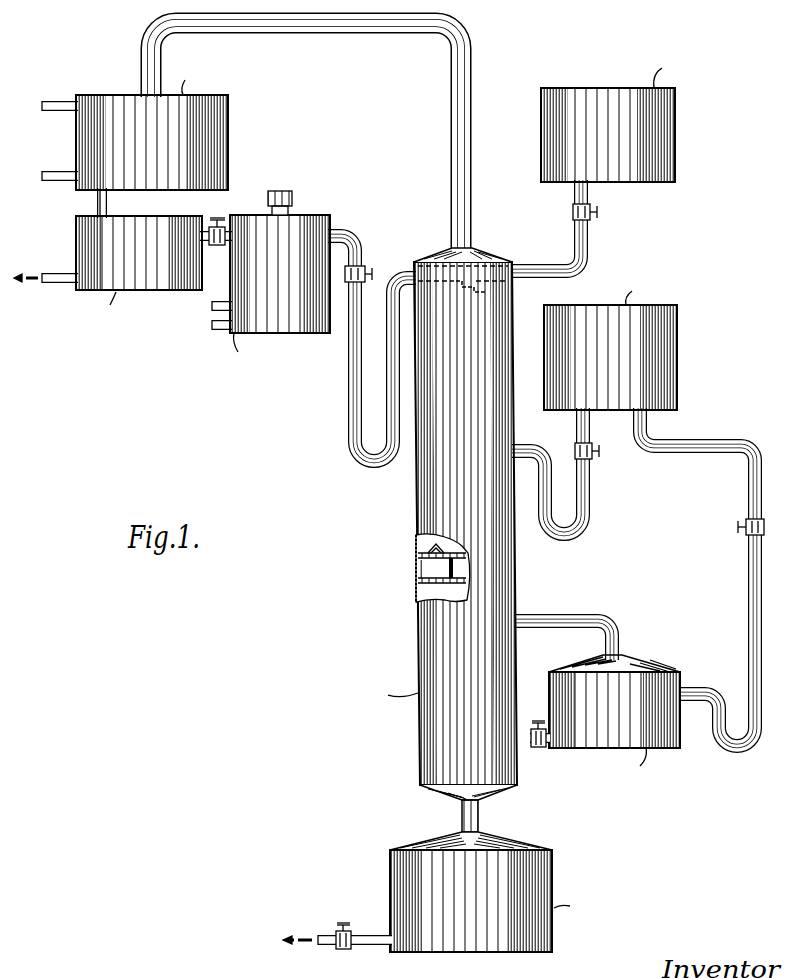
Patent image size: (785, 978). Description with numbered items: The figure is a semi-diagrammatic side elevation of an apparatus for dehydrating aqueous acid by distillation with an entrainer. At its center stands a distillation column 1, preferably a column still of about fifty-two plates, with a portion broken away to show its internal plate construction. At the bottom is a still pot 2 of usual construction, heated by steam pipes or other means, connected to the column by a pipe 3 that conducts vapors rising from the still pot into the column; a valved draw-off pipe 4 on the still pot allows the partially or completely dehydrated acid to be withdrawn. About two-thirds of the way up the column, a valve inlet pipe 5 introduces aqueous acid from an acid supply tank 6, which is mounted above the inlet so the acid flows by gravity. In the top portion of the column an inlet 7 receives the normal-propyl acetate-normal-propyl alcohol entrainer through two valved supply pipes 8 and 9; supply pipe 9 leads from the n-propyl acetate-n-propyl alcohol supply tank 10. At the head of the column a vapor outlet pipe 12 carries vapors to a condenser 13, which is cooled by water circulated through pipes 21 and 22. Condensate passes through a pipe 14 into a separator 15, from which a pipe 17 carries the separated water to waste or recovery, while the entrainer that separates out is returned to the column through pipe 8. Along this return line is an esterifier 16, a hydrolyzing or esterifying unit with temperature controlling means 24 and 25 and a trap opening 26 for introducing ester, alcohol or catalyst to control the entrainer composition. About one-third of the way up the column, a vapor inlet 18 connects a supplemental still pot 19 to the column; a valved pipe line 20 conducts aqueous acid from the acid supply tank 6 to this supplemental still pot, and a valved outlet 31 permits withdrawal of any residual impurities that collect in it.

The distillation column 1 is at (425, 637).
The still pot 2 is at (545, 880).
The pipe 3 is at (474, 818).
The draw-off pipe 4 is at (363, 945).
The valve inlet pipe 5 is at (552, 466).
The acid supply tank 6 is at (666, 346).
The inlet 7 is at (475, 285).
The valved supply pipe 8 is at (218, 224).
The valved supply pipe 9 is at (552, 275).
The n-propyl acetate-n-propyl alcohol supply tank 10 is at (668, 130).
The vapor outlet pipe 12 is at (450, 99).
The condenser 13 is at (212, 118).
The pipe 14 is at (99, 206).
The separator 15 is at (100, 268).
The esterifier 16 is at (314, 216).
The pipe 17 is at (52, 283).
The vapor inlet 18 is at (558, 619).
The supplemental still pot 19 is at (632, 661).
The valved pipe line 20 is at (748, 488).
The pipe 21 is at (62, 167).
The pipe 22 is at (58, 105).
The temperature controlling means 24 is at (218, 330).
The temperature controlling means 25 is at (212, 308).
The trap opening 26 is at (284, 191).
The valved outlet 31 is at (530, 749).